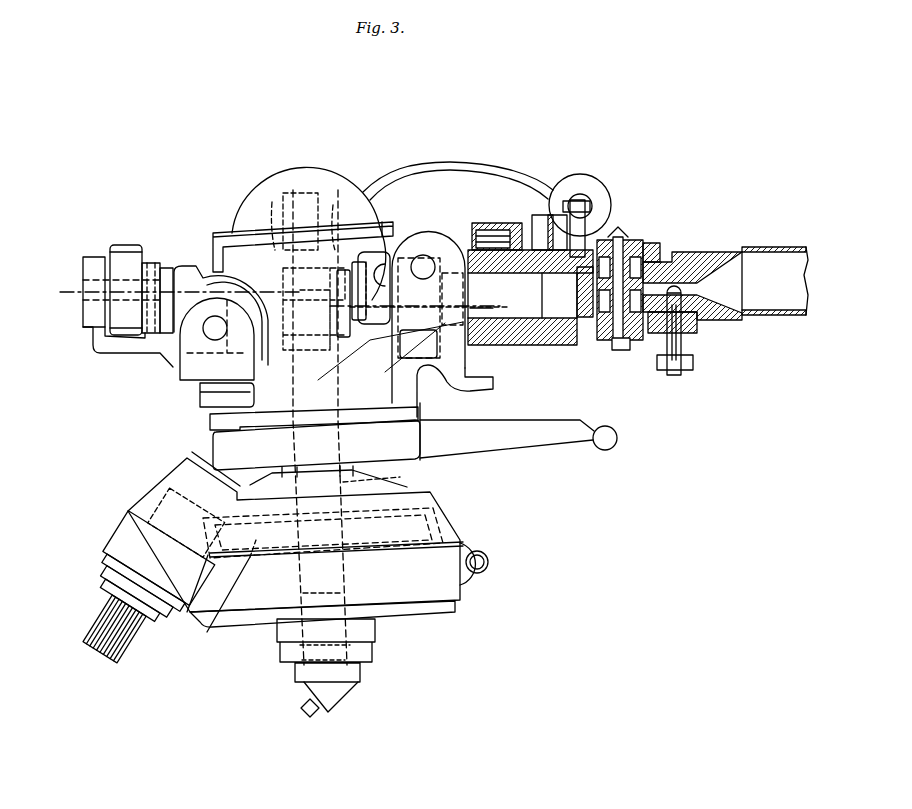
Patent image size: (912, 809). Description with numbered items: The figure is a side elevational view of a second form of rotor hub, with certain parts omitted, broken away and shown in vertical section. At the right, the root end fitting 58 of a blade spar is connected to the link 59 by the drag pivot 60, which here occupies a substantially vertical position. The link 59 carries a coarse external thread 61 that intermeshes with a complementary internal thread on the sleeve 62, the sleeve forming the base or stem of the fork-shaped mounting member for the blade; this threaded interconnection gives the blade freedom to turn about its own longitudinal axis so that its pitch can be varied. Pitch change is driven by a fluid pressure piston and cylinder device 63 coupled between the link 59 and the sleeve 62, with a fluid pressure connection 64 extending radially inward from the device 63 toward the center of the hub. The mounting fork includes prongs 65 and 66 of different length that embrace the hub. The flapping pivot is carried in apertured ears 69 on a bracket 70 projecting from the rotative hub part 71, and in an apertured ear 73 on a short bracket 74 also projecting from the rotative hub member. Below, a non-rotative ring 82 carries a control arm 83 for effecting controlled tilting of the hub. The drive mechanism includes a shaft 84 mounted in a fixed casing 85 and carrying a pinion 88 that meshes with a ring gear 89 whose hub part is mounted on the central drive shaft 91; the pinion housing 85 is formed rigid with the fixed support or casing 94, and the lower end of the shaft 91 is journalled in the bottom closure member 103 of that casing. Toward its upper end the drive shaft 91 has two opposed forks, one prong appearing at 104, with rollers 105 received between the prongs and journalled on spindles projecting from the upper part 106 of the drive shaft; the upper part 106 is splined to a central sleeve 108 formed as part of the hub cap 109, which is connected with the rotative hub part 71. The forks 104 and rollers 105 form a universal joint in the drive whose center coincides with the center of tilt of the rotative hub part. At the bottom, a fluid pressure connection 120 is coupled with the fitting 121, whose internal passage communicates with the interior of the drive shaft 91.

The root end fitting of a blade spar 58 is at (705, 253).
The link 59 is at (592, 340).
The drag pivot 60 is at (660, 252).
The coarse external thread 61 is at (475, 247).
The sleeve 62 is at (520, 345).
The fluid pressure piston and cylinder device 63 is at (576, 178).
The fluid pressure connection 64 is at (433, 160).
The prong 65 is at (150, 256).
The prong 66 is at (344, 270).
The apertured ears 69 is at (96, 259).
The bracket 70 is at (168, 360).
The rotative hub part 71 is at (232, 240).
The apertured ear 73 is at (452, 350).
The short bracket 74 is at (430, 368).
The non-rotative ring 82 is at (435, 432).
The control arm 83 is at (506, 437).
The shaft 84 is at (98, 622).
The fixed casing 85 is at (180, 468).
The pinion 88 is at (150, 502).
The ring gear 89 is at (226, 598).
The central drive shaft 91 is at (400, 477).
The fixed support or casing 94 is at (440, 510).
The bottom closure member 103 is at (411, 602).
The fork prong 104 is at (332, 290).
The rollers 105 is at (292, 345).
The upper part of the drive shaft 106 is at (358, 262).
The central sleeve 108 is at (337, 195).
The hub cap 109 is at (260, 194).
The fluid pressure connection 120 is at (313, 713).
The fitting 121 is at (343, 692).